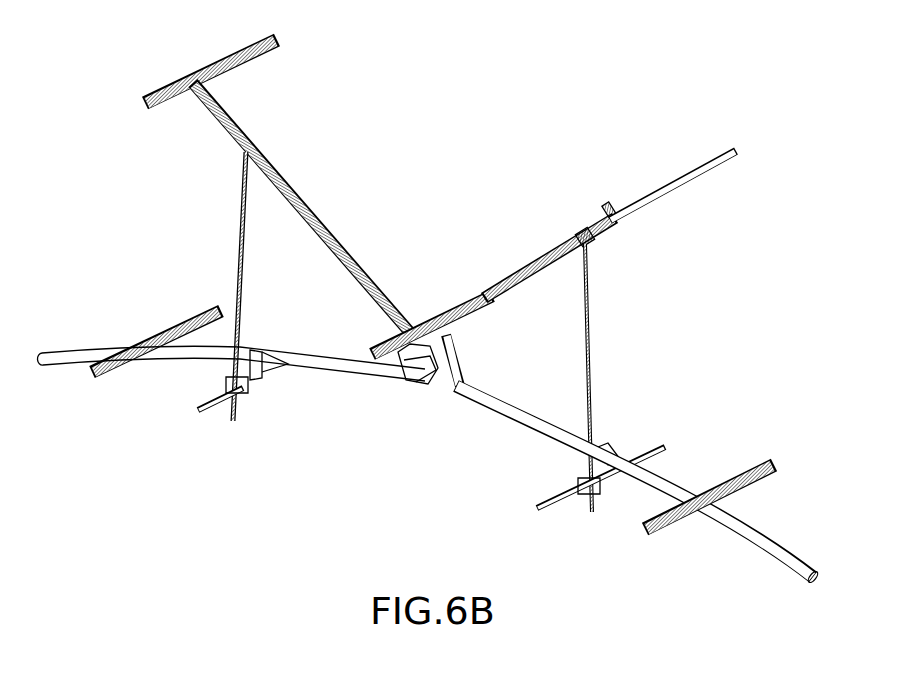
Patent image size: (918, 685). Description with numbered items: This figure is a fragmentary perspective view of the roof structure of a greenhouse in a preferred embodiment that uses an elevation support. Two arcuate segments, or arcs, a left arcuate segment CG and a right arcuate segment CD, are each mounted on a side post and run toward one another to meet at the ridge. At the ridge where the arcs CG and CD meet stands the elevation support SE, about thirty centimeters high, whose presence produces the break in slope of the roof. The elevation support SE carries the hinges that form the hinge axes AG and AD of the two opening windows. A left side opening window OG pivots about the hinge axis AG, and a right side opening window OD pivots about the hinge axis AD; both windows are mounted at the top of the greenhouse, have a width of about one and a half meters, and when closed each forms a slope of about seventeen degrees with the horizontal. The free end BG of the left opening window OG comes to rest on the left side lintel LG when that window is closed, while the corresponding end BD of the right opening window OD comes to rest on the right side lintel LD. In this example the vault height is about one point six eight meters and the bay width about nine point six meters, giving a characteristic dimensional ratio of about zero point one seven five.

The end of left opening window BG is at (228, 54).
The left side opening window OG is at (324, 215).
The hinge axis of left opening window AG is at (423, 326).
The right side opening window OD is at (530, 265).
The end of right opening window BD is at (693, 173).
The left side lintel LG is at (110, 383).
The left arcuate segment CG is at (331, 363).
The hinge axis of right opening window AD is at (430, 373).
The elevation support SE is at (454, 341).
The right arcuate segment CD is at (540, 424).
The right side lintel LD is at (682, 526).